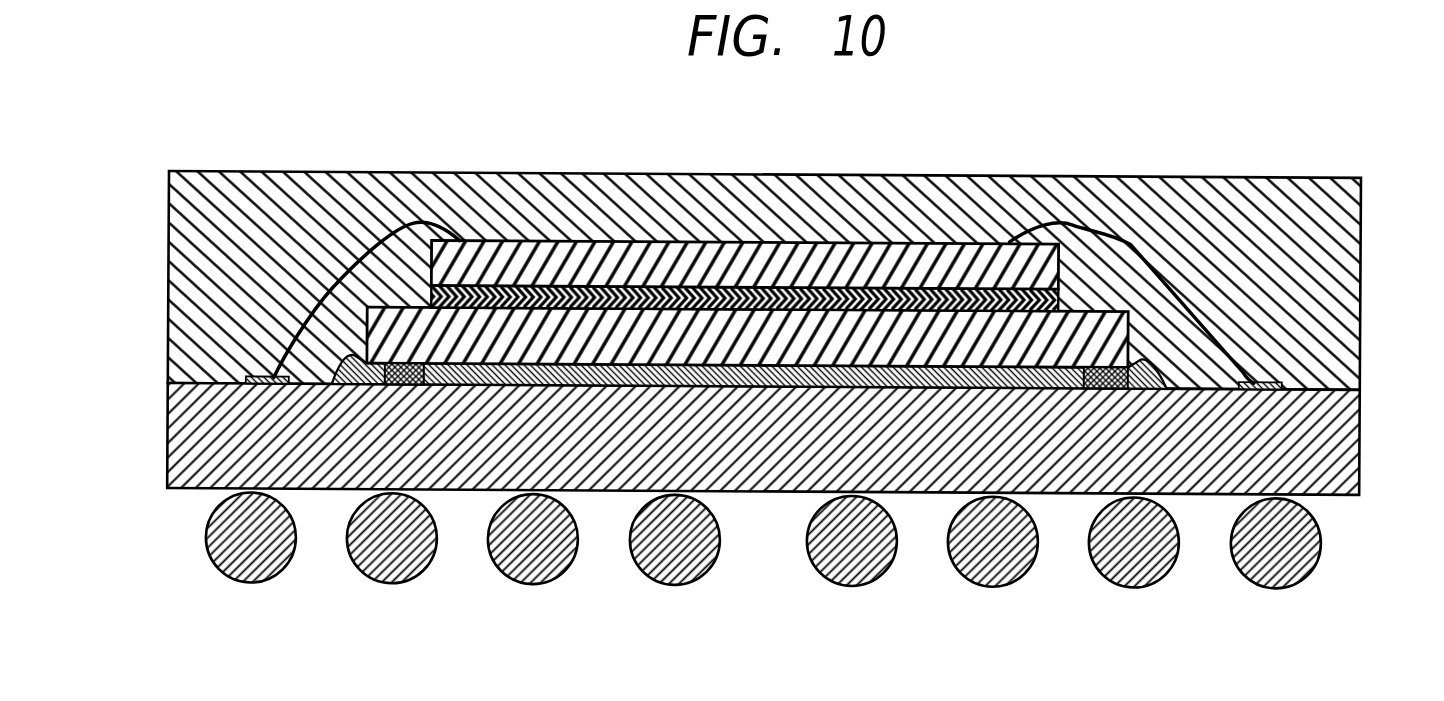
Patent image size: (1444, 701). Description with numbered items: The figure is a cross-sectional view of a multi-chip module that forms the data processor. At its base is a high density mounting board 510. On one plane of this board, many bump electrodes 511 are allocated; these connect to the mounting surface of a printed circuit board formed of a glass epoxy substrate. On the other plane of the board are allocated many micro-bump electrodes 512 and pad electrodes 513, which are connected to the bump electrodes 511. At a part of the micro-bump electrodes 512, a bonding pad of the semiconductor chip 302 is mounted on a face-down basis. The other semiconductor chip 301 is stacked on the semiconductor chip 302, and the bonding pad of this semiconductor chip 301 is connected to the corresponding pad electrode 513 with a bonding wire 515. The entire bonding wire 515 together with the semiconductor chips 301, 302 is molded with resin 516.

The semiconductor chip 301 is at (651, 222).
The semiconductor chip 302 is at (403, 282).
The high density mounting board 510 is at (1361, 435).
The bump electrodes 511 is at (213, 556).
The micro-bump electrodes 512 is at (423, 387).
The pad electrodes 513 is at (255, 377).
The bonding wire 515 is at (433, 221).
The resin 516 is at (1356, 245).